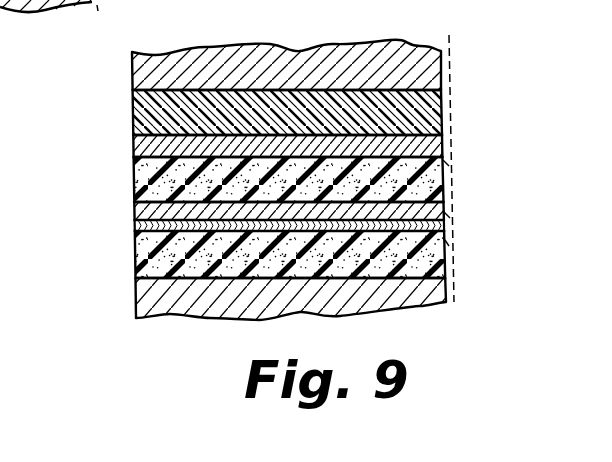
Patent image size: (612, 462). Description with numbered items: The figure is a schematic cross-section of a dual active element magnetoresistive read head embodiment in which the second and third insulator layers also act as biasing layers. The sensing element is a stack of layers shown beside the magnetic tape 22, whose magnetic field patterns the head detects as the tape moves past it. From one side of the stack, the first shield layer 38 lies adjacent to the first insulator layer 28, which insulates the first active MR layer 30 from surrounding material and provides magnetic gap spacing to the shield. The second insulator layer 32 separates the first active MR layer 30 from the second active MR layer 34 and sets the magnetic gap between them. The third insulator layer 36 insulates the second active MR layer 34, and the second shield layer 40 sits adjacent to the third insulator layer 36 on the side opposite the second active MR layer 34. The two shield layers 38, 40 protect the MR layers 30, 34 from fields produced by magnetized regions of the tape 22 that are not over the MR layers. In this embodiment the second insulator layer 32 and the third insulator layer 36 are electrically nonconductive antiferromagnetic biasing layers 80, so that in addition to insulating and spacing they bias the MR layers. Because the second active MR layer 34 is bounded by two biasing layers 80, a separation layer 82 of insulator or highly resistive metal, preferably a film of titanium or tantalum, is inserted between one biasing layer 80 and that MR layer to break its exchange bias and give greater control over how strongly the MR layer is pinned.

The tape 22 is at (449, 50).
The first insulator layer 28 is at (132, 108).
The first active MR layer 30 is at (132, 147).
The second insulator layer 32 is at (133, 183).
The second active MR layer 34 is at (134, 212).
The third insulator layer 36 is at (134, 247).
The first shield layer 38 is at (132, 76).
The second shield layer 40 is at (135, 293).
The biasing layer 80 is at (449, 163).
The separation layer 82 is at (447, 215).